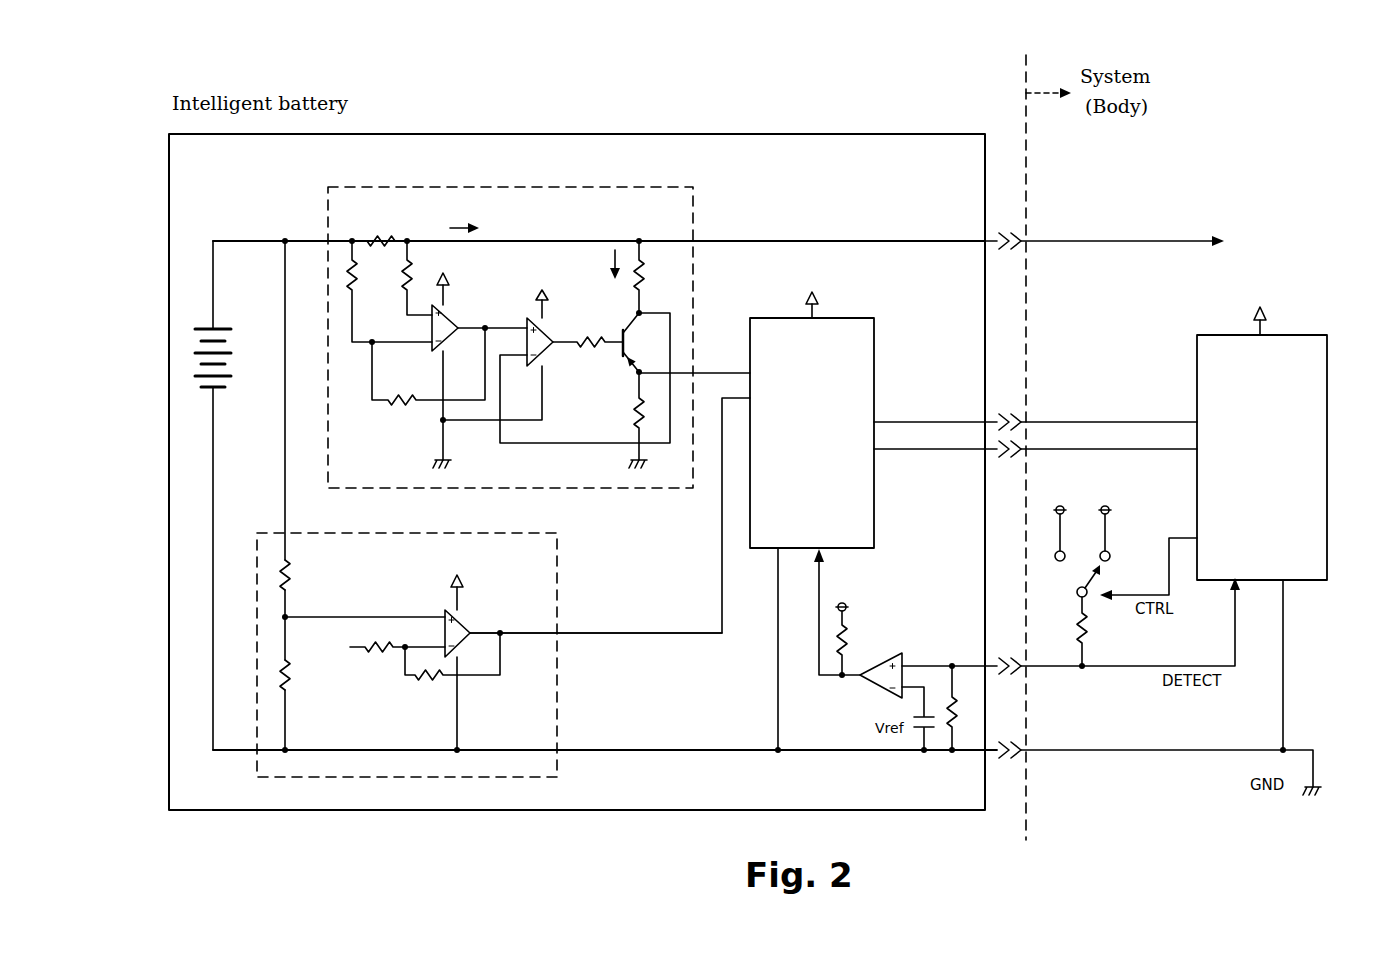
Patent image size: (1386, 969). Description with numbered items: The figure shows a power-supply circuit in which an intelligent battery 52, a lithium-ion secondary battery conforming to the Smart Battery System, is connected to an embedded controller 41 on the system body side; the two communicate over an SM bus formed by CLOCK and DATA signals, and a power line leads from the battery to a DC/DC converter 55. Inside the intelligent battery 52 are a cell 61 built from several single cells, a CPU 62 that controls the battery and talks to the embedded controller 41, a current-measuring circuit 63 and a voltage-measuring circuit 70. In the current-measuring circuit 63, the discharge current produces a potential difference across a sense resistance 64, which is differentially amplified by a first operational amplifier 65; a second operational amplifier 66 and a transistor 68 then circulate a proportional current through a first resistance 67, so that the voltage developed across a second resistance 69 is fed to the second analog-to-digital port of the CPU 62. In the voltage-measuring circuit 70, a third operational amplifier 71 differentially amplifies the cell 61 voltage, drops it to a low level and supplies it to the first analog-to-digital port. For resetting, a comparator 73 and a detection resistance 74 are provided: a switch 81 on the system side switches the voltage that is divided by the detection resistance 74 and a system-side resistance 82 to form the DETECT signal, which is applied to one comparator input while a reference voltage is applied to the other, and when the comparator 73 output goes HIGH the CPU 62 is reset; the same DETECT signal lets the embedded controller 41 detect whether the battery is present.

The intelligent battery 52 is at (603, 134).
The DC/DC converter 55 is at (1189, 245).
The cell 61 is at (236, 387).
The CPU 62 is at (840, 318).
The current-measuring circuit 63 is at (587, 183).
The resistance (RS) 64 is at (367, 240).
The operational amplifier (AMP1) 65 is at (458, 318).
The operational amplifier (AMP2) 66 is at (549, 355).
The resistance (R1) 67 is at (648, 283).
The transistor 68 is at (645, 346).
The resistance (R2) 69 is at (635, 420).
The voltage-measuring circuit 70 is at (489, 638).
The operational amplifier (AMP3) 71 is at (445, 612).
The comparator 73 is at (870, 682).
The resistance (R1) 74 is at (948, 728).
The switch 81 is at (1124, 547).
The resistance (R2) 82 is at (1080, 648).
The embedded controller 41 is at (1305, 335).